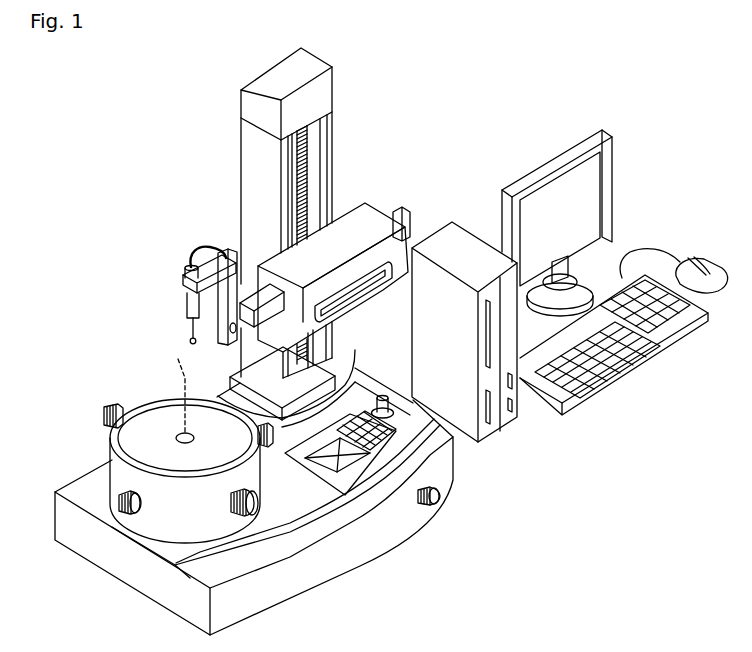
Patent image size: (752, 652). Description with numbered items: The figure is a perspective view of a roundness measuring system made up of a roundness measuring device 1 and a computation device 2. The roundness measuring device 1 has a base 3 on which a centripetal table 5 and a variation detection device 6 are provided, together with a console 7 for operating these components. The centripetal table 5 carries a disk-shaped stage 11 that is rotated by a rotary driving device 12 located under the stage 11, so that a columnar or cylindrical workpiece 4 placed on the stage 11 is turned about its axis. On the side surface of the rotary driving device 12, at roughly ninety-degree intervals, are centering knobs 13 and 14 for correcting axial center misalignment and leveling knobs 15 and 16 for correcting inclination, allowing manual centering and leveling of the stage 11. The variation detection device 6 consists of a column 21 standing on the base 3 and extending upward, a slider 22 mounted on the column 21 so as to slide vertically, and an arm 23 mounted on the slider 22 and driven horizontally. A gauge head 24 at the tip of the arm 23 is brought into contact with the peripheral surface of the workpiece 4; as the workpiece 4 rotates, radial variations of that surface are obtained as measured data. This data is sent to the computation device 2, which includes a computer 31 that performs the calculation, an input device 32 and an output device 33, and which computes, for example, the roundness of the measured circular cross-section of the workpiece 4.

The roundness measuring device 1 is at (91, 377).
The computation device 2 is at (618, 95).
The base 3 is at (60, 505).
The workpiece 4 is at (178, 387).
The centripetal table 5 is at (99, 444).
The variation detection device 6 is at (236, 217).
The console 7 is at (382, 398).
The stage 11 is at (132, 410).
The rotary driving device 12 is at (160, 535).
The centering knob 13 is at (113, 513).
The centering knob 14 is at (252, 508).
The leveling knob 15 is at (264, 446).
The leveling knob 16 is at (103, 409).
The column 21 is at (326, 96).
The slider 22 is at (378, 210).
The arm 23 is at (256, 292).
The gauge head 24 is at (190, 335).
The computer 31 is at (505, 428).
The input device 32 is at (642, 258).
The output device 33 is at (556, 160).